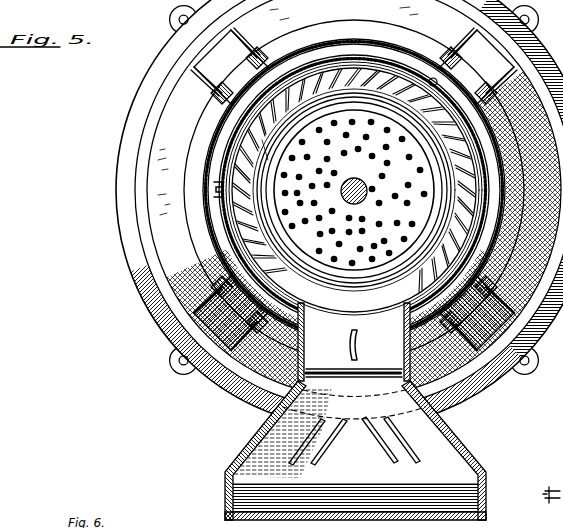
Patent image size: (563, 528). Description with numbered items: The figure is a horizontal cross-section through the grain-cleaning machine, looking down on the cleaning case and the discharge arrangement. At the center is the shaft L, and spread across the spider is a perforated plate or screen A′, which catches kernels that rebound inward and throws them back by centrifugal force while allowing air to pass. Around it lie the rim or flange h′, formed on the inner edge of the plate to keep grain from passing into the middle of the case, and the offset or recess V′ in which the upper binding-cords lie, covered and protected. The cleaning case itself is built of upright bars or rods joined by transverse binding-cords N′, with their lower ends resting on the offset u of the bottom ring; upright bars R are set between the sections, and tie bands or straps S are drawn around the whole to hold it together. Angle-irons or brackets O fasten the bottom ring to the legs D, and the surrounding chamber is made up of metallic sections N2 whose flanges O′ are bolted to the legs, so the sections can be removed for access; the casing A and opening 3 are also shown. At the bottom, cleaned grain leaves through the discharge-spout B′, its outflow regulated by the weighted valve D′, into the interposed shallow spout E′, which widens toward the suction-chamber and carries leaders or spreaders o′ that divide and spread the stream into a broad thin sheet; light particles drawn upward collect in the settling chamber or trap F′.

The casing A is at (174, 231).
The metallic section N2 is at (363, 207).
The offset u is at (354, 190).
The tie band or strap S is at (351, 190).
The binding-cord or wire N′ is at (354, 180).
The offset or recess V′ is at (354, 186).
The rim or flange h′ is at (354, 189).
The upright bar R is at (354, 190).
The perforated plate or screen A′ is at (402, 170).
The opening 3 is at (264, 150).
The shaft L is at (355, 181).
The leg D is at (354, 66).
The flange O′ is at (462, 43).
The angle-iron or bracket O is at (439, 82).
The settling chamber or trap F′ is at (262, 343).
The discharge-spout B′ is at (354, 342).
The weighted valve D′ is at (340, 339).
The spout E′ is at (355, 450).
The leader or spreader o′ is at (412, 442).